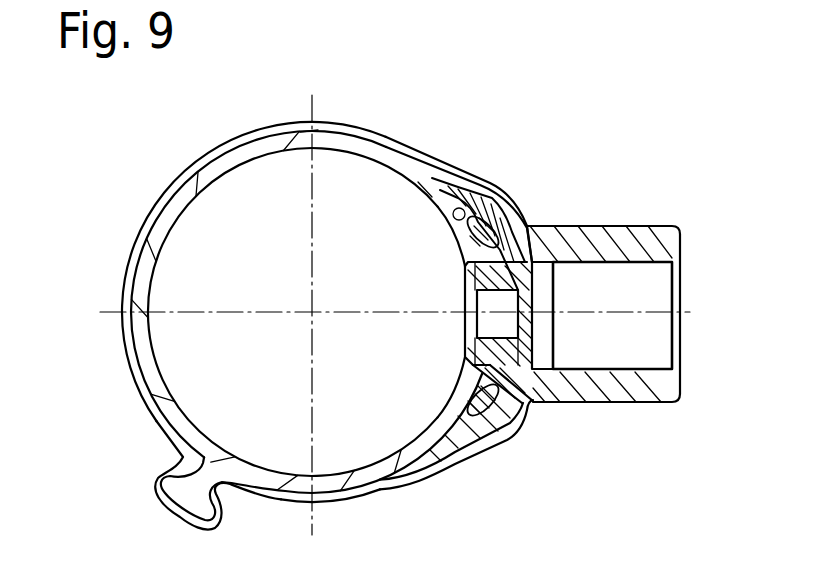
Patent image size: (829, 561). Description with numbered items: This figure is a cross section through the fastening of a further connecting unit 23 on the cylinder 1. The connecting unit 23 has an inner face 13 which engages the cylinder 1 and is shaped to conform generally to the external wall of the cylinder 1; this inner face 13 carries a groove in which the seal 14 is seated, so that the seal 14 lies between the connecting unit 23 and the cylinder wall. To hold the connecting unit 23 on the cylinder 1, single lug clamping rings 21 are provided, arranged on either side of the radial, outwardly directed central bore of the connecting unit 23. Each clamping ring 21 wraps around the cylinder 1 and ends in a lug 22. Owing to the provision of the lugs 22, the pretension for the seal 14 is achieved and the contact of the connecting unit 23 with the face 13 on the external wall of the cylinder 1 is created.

The cylinder 1 is at (413, 166).
The inner face 13 is at (486, 216).
The seal 14 is at (497, 421).
The single lug clamping ring 21 is at (483, 178).
The lug 22 is at (166, 478).
The connecting unit 23 is at (652, 246).